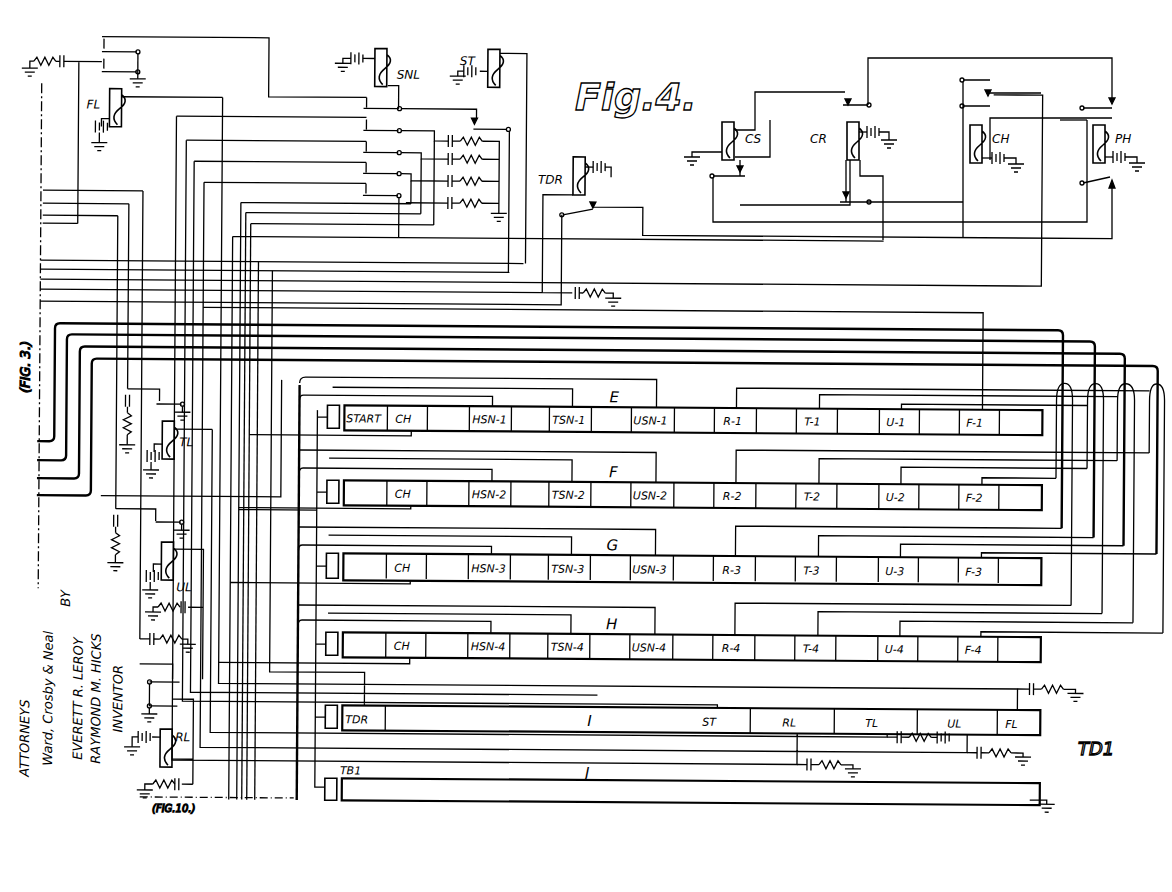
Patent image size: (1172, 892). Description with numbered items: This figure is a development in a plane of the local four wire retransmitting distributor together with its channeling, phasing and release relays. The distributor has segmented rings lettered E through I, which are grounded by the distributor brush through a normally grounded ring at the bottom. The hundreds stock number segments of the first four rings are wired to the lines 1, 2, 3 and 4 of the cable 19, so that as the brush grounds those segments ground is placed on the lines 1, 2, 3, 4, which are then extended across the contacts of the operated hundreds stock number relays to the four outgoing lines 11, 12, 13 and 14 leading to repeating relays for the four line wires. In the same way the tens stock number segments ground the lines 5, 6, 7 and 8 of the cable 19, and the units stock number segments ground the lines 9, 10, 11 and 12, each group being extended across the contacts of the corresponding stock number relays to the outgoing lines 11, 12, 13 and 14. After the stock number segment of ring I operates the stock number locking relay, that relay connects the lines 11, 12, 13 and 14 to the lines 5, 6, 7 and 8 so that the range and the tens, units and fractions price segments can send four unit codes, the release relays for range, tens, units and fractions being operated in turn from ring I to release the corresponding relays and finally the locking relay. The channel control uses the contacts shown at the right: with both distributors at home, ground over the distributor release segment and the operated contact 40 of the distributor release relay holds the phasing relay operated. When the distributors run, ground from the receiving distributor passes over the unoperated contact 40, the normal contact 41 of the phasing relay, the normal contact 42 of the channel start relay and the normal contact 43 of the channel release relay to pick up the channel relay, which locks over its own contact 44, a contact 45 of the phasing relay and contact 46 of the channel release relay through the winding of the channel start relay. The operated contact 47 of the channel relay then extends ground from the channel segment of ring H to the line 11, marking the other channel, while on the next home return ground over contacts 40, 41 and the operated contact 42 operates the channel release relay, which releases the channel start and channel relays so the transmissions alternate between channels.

The line of cable 19 1 is at (395, 401).
The line of cable 19 2 is at (395, 474).
The line of cable 19 3 is at (394, 550).
The line of cable 19 4 is at (394, 627).
The line of cable 19 5 is at (345, 373).
The line of cable 19 6 is at (340, 446).
The line of cable 19 7 is at (340, 523).
The line of cable 19 8 is at (330, 613).
The line of cable 19 9 is at (343, 309).
The line of cable 19 10 is at (477, 460).
The outgoing line 11 is at (219, 806).
The outgoing line 12 is at (228, 806).
The outgoing line 13 is at (236, 798).
The outgoing line 14 is at (243, 798).
The cable 19 is at (278, 538).
The contact of relay TDR 40 is at (590, 220).
The normal contact of phasing relay PH 41 is at (1118, 177).
The contact of relay CS 42 is at (742, 178).
The normal contact of relay CR 43 is at (854, 189).
The contact of relay CH 44 is at (978, 94).
The contact of relay PH 45 is at (1112, 104).
The contact of relay CR 46 is at (852, 96).
The operated contact of relay CH 47 is at (985, 80).